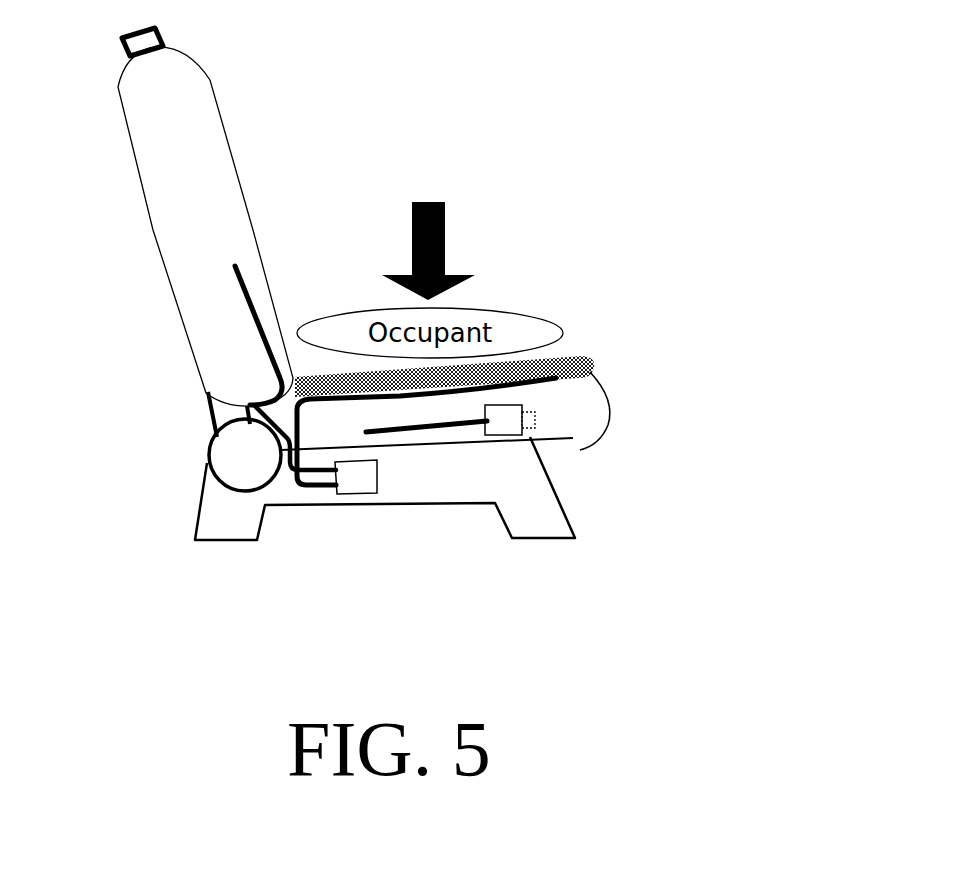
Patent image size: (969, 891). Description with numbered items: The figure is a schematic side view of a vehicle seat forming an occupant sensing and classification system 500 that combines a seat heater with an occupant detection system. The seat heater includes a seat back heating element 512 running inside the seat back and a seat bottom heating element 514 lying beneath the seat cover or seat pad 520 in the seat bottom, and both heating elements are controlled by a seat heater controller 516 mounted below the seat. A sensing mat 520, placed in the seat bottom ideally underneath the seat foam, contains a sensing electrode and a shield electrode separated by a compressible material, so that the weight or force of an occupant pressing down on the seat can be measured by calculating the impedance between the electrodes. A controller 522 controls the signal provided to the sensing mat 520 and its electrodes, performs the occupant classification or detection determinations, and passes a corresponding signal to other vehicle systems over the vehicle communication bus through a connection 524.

The occupant sensing and classification system 500 is at (545, 180).
The seat back heating element 512 is at (244, 339).
The seat bottom heating element 514 is at (568, 377).
The seat heater controller 516 is at (353, 485).
The seat pad 520 is at (583, 342).
The controller 522 is at (505, 420).
The connection 524 is at (530, 422).